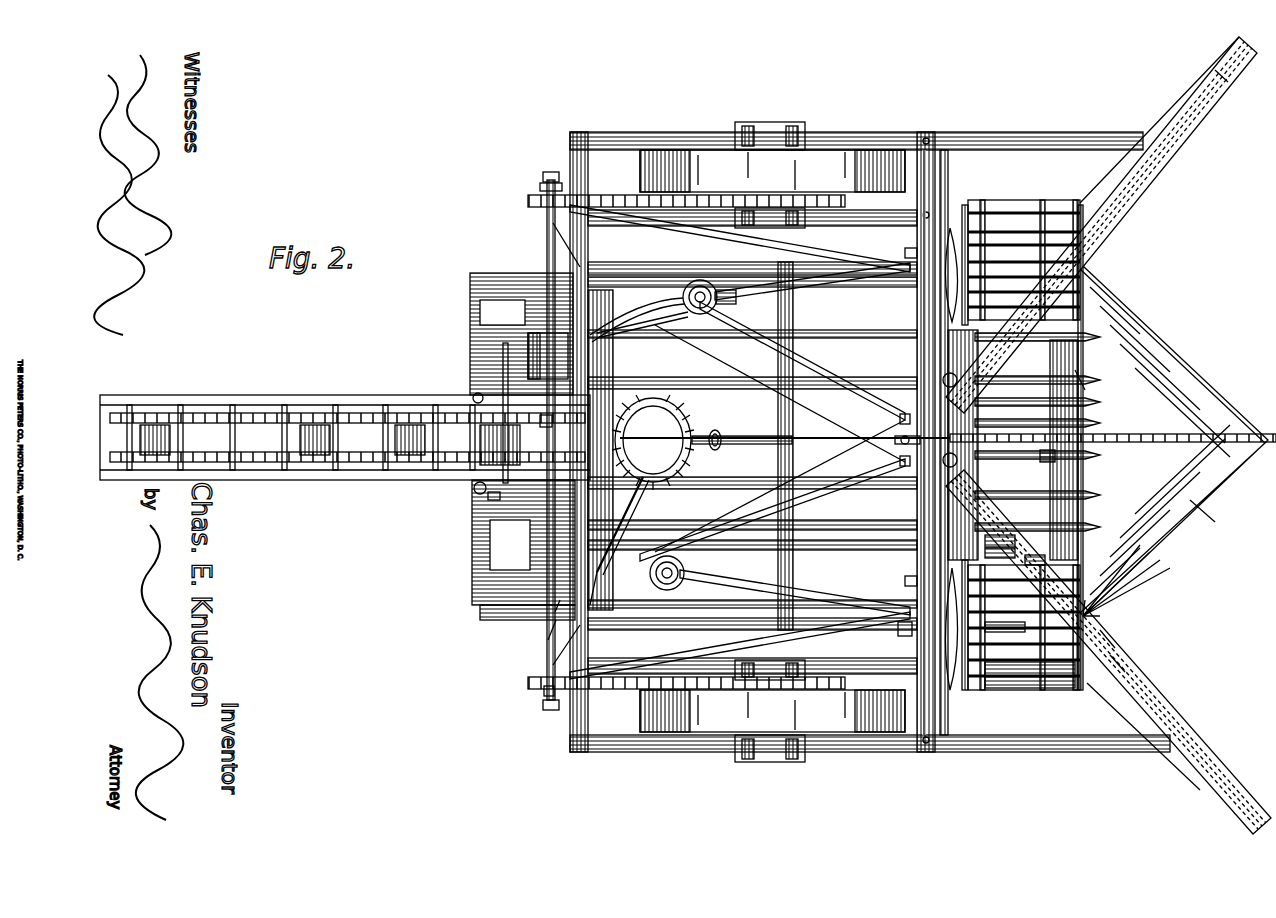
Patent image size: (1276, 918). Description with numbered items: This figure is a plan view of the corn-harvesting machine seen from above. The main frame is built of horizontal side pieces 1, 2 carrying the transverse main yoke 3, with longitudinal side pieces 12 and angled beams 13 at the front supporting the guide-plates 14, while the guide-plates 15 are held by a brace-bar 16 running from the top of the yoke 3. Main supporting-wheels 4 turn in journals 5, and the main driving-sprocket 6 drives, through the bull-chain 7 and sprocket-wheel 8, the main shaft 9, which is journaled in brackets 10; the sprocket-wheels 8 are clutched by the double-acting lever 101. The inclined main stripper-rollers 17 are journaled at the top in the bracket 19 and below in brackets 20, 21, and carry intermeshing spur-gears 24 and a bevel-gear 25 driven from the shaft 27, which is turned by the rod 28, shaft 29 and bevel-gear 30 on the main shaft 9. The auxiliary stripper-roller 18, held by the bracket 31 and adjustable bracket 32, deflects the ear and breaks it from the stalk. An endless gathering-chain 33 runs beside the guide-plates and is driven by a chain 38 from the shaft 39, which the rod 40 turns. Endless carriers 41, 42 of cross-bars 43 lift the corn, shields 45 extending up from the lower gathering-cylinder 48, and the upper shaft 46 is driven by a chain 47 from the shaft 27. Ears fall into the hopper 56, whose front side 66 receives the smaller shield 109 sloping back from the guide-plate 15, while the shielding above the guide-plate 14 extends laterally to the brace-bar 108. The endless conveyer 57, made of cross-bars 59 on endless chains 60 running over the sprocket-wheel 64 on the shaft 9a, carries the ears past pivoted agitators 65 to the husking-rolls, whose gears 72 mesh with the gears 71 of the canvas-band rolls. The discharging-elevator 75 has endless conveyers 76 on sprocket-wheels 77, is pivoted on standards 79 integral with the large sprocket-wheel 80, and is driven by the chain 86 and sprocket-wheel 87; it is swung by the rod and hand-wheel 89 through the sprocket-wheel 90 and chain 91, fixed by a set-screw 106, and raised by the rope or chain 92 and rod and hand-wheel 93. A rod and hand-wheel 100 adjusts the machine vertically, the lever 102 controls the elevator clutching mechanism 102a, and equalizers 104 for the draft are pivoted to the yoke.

The horizontal side piece 1 is at (958, 134).
The horizontal side piece 2 is at (945, 676).
The main yoke 3 is at (915, 300).
The main supporting-wheel 4 is at (772, 441).
The journal 5 is at (775, 124).
The main driving-sprocket 6 is at (845, 215).
The bull-chain 7 is at (625, 196).
The sprocket-wheel 8 is at (543, 190).
The main shaft 9 is at (547, 250).
The shaft 9a is at (521, 334).
The bracket 10 is at (553, 262).
The longitudinal side piece 12 is at (700, 264).
The beam 13 is at (1092, 192).
The guide-plate 14 is at (1232, 92).
The guide-plate 15 is at (1160, 352).
The brace-bar 16 is at (1130, 437).
The main stripper-roller 17 is at (905, 252).
The auxiliary stripper-roller 18 is at (1006, 546).
The bracket 19 is at (996, 459).
The journal-bracket 20 is at (752, 542).
The bracket 21 is at (965, 210).
The spur-gear 24 is at (1037, 453).
The bevel-gear 25 is at (1000, 341).
The shaft 27 is at (895, 440).
The rod 28 is at (812, 403).
The shaft 29 is at (628, 340).
The bevel-gear 30 is at (472, 572).
The bracket 31 is at (985, 419).
The adjustable bracket 32 is at (917, 315).
The endless gathering-chain 33 is at (1000, 548).
The chain 38 is at (1015, 688).
The shaft 39 is at (1005, 634).
The rod 40 is at (813, 290).
The endless carrier 41 is at (1083, 336).
The endless carrier 42 is at (1024, 442).
The cross-bar 43 is at (1108, 640).
The shield 45 is at (1100, 602).
The upper shaft 46 is at (1037, 560).
The chain 47 is at (882, 395).
The lower gathering-cylinder 48 is at (900, 632).
The hopper 56 is at (1043, 464).
The endless conveyer 57 is at (1086, 495).
The cross-bar 59 is at (1078, 380).
The endless chain 60 is at (548, 358).
The sprocket-wheel 64 is at (490, 413).
The agitator 65 is at (1088, 402).
The front side 66 is at (1086, 526).
The gear 71 is at (615, 318).
The gear 72 is at (752, 333).
The discharging-elevator 75 is at (345, 449).
The endless conveyer 76 is at (350, 413).
The sprocket-wheel 77 is at (551, 426).
The standard 79 is at (490, 500).
The large sprocket-wheel 80 is at (474, 490).
The chain 86 is at (548, 640).
The sprocket-wheel 87 is at (555, 612).
The rod and hand-wheel 89 is at (700, 286).
The sprocket-wheel 90 is at (736, 300).
The chain 91 is at (472, 394).
The rope or chain 92 is at (630, 420).
The rod and hand-wheel 93 is at (740, 436).
The rod and hand-wheel 100 is at (680, 568).
The double-acting lever 101 is at (722, 450).
The lever 102 is at (648, 510).
The clutching mechanism 102a is at (544, 691).
The equalizer 104 is at (902, 416).
The set-screw 106 is at (1226, 90).
The brace-bar 108 is at (1125, 670).
The shield 109 is at (1205, 504).